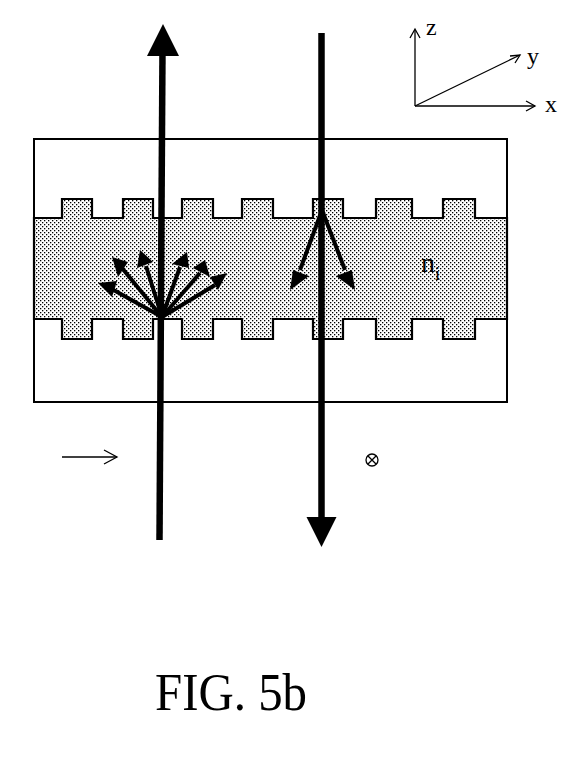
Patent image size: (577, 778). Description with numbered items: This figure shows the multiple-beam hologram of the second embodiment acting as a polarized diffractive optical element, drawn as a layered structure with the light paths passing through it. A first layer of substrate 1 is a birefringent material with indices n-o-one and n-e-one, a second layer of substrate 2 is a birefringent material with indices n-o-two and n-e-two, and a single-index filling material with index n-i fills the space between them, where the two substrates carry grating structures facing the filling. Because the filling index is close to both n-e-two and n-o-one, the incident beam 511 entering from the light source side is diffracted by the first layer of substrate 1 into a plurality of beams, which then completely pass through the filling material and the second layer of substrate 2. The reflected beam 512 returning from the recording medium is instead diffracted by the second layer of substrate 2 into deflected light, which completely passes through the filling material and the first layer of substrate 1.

The incident beam 511 is at (162, 308).
The reflected beam 512 is at (322, 313).
The first (lower) substrate with refractive indices n_o1, n_e1 1 is at (365, 376).
The second (upper) substrate with refractive indices n_e2, n_o2 2 is at (372, 179).